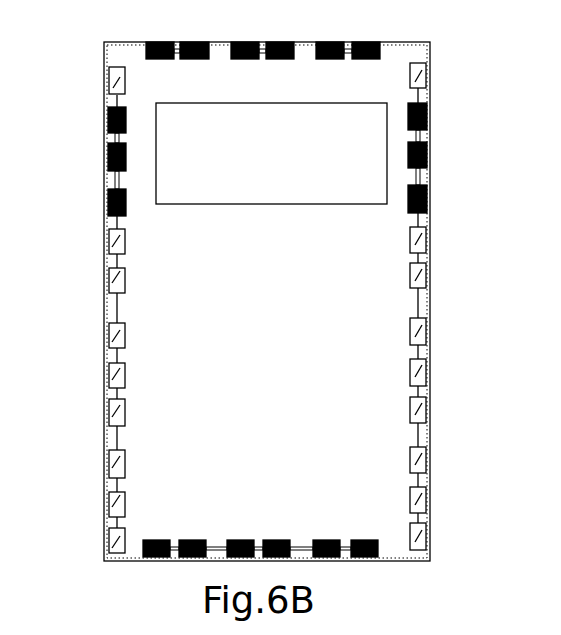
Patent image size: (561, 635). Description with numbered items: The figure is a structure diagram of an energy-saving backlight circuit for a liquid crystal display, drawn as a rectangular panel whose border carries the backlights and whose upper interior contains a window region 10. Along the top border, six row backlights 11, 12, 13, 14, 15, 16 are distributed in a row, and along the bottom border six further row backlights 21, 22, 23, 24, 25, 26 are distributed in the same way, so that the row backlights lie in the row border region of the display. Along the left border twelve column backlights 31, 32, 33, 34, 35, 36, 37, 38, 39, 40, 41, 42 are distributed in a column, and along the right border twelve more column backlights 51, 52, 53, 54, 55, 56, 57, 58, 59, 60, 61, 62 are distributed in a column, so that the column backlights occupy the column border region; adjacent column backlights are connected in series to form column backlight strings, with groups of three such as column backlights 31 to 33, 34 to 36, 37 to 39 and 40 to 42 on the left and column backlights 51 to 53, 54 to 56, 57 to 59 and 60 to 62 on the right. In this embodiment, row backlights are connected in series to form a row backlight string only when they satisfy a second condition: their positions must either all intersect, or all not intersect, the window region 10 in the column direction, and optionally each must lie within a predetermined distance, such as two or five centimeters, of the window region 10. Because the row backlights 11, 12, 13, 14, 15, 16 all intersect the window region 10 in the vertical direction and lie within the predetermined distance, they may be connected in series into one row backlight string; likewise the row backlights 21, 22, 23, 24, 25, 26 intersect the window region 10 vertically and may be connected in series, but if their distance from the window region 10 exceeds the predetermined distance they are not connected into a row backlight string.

The window region 10 is at (245, 160).
The row backlight 11 is at (160, 42).
The row backlight 12 is at (194, 42).
The row backlight 13 is at (245, 42).
The row backlight 14 is at (280, 42).
The row backlight 15 is at (330, 42).
The row backlight 16 is at (366, 42).
The row backlight 21 is at (157, 540).
The row backlight 22 is at (193, 540).
The row backlight 23 is at (241, 540).
The row backlight 24 is at (277, 540).
The row backlight 25 is at (327, 540).
The row backlight 26 is at (365, 540).
The column backlight 31 is at (114, 82).
The column backlight 32 is at (108, 122).
The column backlight 33 is at (108, 156).
The column backlight 34 is at (108, 205).
The column backlight 35 is at (114, 243).
The column backlight 36 is at (114, 279).
The column backlight 37 is at (114, 338).
The column backlight 38 is at (114, 376).
The column backlight 39 is at (114, 413).
The column backlight 40 is at (114, 464).
The column backlight 41 is at (114, 503).
The column backlight 42 is at (114, 544).
The column backlight 51 is at (421, 68).
The column backlight 52 is at (428, 111).
The column backlight 53 is at (428, 149).
The column backlight 54 is at (428, 197).
The column backlight 55 is at (421, 233).
The column backlight 56 is at (421, 273).
The column backlight 57 is at (421, 328).
The column backlight 58 is at (421, 363).
The column backlight 59 is at (421, 404).
The column backlight 60 is at (421, 451).
The column backlight 61 is at (421, 498).
The column backlight 62 is at (421, 534).